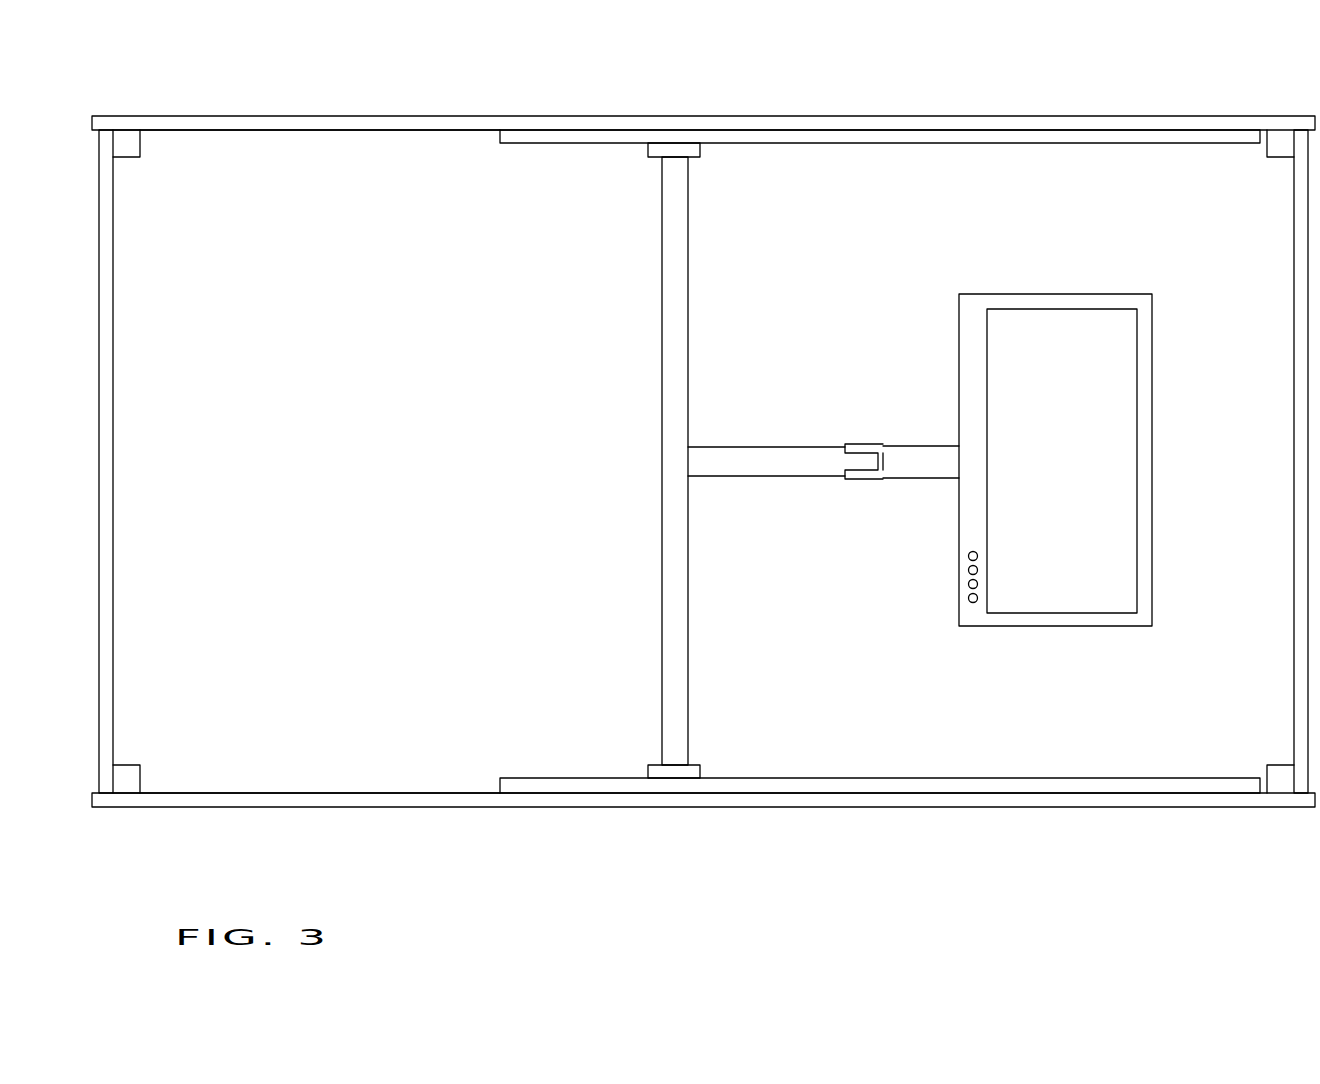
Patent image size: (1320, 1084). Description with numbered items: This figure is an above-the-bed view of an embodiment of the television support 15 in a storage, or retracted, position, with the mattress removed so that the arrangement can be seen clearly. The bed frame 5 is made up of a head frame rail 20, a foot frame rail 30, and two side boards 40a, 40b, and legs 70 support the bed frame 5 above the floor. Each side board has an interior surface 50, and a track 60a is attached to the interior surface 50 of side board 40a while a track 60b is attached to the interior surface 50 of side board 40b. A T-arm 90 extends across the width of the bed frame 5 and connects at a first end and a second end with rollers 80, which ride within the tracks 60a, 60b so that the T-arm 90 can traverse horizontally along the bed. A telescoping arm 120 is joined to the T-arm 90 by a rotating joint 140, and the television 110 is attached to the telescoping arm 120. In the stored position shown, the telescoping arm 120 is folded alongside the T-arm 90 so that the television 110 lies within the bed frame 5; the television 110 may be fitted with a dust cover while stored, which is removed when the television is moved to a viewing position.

The bed frame 5 is at (241, 100).
The television support 15 is at (742, 527).
The head frame rail 20 is at (107, 432).
The foot frame rail 30 is at (1300, 392).
The side board 40a is at (540, 115).
The side board 40b is at (570, 808).
The interior surface 50 is at (365, 130).
The track 60a is at (555, 145).
The track 60b is at (555, 778).
The legs 70 is at (135, 778).
The rollers 80 is at (705, 143).
The T-arm 90 is at (690, 390).
The television 110 is at (1040, 294).
The telescoping arm 120 is at (920, 480).
The rotating joint 140 is at (855, 447).